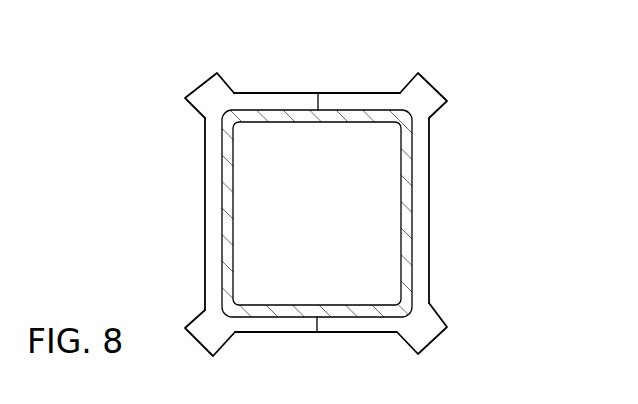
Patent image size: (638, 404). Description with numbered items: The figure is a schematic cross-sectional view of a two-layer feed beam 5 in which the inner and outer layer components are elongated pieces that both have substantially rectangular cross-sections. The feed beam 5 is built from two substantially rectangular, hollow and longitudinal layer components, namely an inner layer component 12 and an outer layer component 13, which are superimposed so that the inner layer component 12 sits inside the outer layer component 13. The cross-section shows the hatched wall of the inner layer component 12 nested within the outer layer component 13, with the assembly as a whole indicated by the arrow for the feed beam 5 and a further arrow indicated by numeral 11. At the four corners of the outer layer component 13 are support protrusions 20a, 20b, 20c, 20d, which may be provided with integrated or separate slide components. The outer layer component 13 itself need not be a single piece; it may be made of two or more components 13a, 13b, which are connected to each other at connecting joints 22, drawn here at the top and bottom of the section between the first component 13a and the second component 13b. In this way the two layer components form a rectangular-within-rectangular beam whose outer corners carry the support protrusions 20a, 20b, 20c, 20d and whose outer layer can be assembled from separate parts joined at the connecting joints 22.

The two-layer feed beam 5 is at (82, 132).
The tubular member 11 is at (127, 198).
The inner layer component 12 is at (233, 212).
The outer layer component 13 is at (328, 212).
The component of outer layer component 13a is at (223, 212).
The component of outer layer component 13b is at (423, 207).
The support protrusion 20a is at (212, 96).
The support protrusion 20b is at (427, 97).
The support protrusion 20c is at (209, 327).
The support protrusion 20d is at (421, 331).
The connecting joint 22 is at (322, 95).